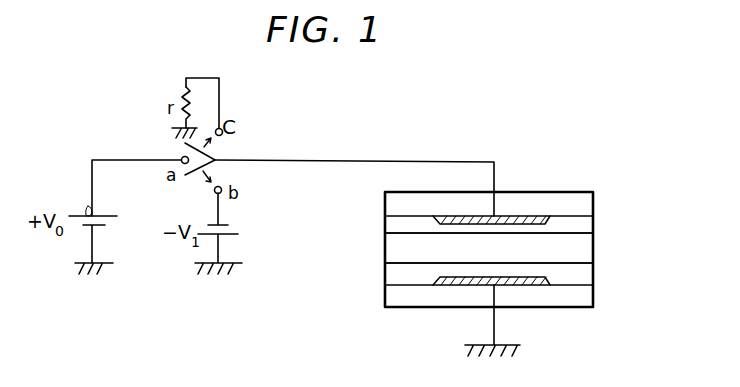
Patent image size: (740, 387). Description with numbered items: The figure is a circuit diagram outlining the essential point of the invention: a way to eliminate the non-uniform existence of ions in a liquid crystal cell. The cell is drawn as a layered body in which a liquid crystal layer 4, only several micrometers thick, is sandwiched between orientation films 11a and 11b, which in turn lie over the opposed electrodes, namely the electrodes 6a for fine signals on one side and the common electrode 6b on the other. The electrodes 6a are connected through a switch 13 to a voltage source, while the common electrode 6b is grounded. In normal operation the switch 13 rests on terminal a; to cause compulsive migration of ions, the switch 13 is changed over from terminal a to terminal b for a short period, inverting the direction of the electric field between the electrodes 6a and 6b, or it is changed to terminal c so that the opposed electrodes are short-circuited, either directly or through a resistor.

The switch 13 is at (214, 157).
The liquid crystal layer 4 is at (583, 255).
The electrodes for fine signals 6a is at (541, 216).
The common electrode 6b is at (540, 285).
The orientation film 11a is at (583, 227).
The orientation film 11b is at (583, 280).